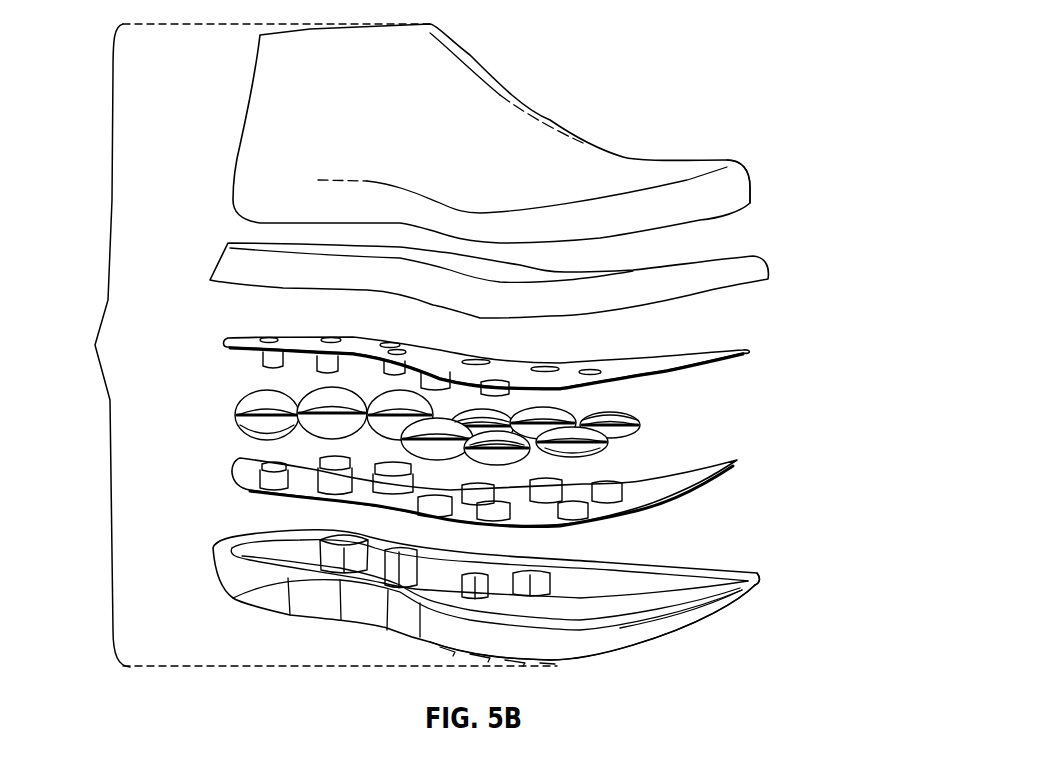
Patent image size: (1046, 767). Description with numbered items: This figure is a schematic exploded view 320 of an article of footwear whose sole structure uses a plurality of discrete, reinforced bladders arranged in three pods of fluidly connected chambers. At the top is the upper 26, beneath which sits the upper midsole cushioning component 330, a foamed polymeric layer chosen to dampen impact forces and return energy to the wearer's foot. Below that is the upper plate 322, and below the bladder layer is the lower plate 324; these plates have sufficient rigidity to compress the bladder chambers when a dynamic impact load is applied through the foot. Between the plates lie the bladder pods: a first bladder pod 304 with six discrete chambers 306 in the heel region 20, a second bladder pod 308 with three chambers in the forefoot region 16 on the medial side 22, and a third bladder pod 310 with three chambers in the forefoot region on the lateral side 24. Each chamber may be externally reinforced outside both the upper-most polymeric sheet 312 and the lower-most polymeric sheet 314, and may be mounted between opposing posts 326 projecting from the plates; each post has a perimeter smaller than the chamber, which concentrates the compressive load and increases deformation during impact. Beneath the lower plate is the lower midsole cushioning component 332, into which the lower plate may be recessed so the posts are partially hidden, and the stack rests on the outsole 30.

The forefoot region 16 is at (642, 652).
The heel region 20 is at (260, 617).
The medial side 22 is at (717, 110).
The lateral side 24 is at (504, 126).
The upper 26 is at (752, 187).
The outsole 30 is at (717, 612).
The first bladder pod 304 is at (250, 397).
The chamber 306 is at (243, 415).
The second bladder pod 308 is at (630, 413).
The third bladder pod 310 is at (490, 443).
The upper-most polymeric sheet 312 is at (490, 410).
The lower-most polymeric sheet 314 is at (430, 460).
The schematic exploded view 320 is at (303, 345).
The upper plate 322 is at (747, 348).
The lower plate 324 is at (707, 483).
The post 326 is at (263, 363).
The upper midsole cushioning component 330 is at (772, 265).
The lower midsole cushioning component 332 is at (758, 573).